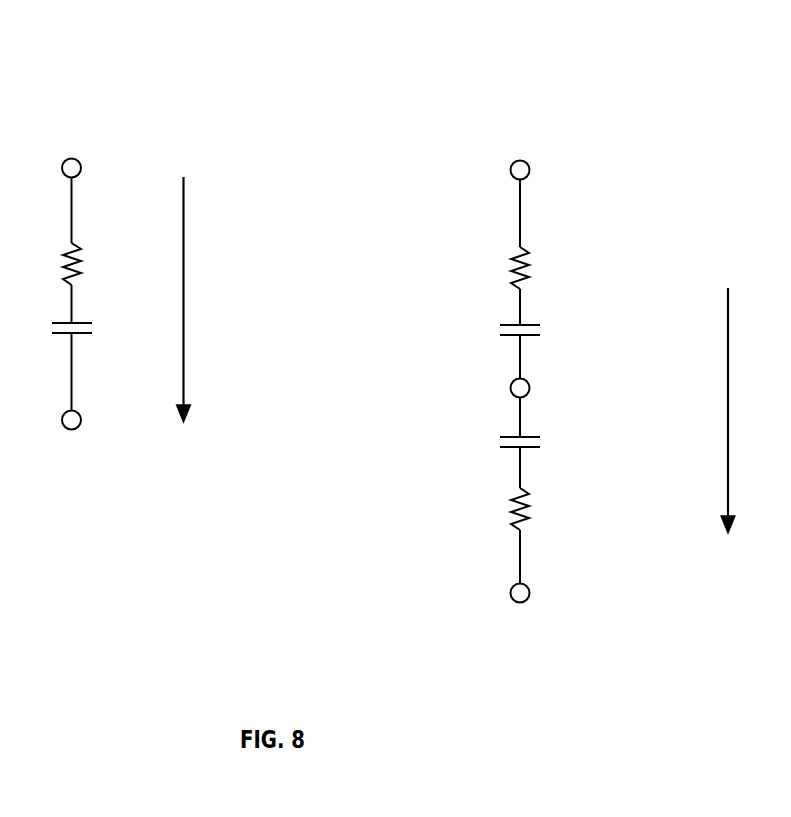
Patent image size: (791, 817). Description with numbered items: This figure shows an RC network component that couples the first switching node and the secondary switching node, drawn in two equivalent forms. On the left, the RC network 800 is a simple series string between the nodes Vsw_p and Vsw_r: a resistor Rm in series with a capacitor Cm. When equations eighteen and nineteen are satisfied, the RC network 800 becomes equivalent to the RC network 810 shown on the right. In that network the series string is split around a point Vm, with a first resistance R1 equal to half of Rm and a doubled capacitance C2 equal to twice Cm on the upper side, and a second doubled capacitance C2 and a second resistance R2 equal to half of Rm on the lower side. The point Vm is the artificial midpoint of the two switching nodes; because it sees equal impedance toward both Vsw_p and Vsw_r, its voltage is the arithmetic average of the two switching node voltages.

The RC network 800 is at (135, 235).
The RC network 810 is at (631, 322).
The resistor Rm is at (105, 264).
The capacitor Cm is at (98, 328).
The first half resistance R1=1/2 Rm R1 is at (593, 268).
The second half resistance R2=1/2 Rm R2 is at (591, 509).
The doubled capacitance C2=2 Cm C2 is at (585, 387).
The artificial midpoint Vm is at (554, 389).